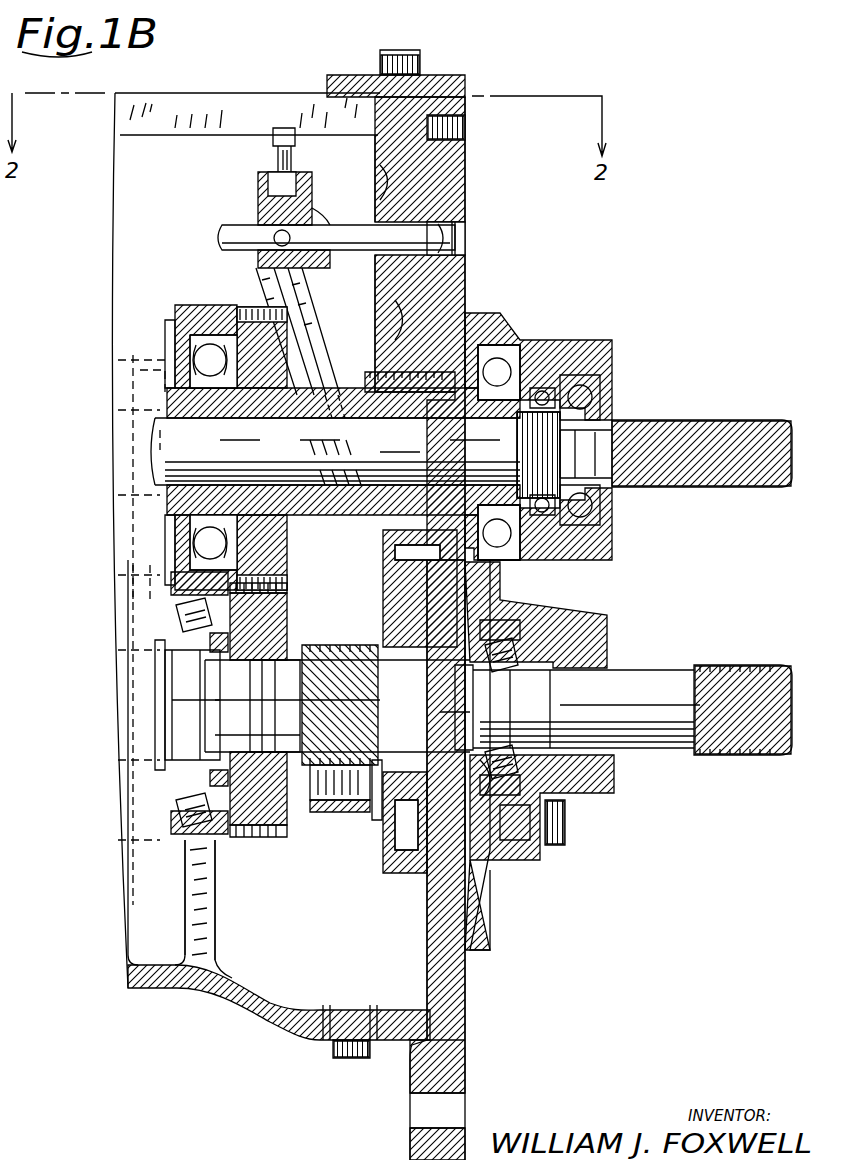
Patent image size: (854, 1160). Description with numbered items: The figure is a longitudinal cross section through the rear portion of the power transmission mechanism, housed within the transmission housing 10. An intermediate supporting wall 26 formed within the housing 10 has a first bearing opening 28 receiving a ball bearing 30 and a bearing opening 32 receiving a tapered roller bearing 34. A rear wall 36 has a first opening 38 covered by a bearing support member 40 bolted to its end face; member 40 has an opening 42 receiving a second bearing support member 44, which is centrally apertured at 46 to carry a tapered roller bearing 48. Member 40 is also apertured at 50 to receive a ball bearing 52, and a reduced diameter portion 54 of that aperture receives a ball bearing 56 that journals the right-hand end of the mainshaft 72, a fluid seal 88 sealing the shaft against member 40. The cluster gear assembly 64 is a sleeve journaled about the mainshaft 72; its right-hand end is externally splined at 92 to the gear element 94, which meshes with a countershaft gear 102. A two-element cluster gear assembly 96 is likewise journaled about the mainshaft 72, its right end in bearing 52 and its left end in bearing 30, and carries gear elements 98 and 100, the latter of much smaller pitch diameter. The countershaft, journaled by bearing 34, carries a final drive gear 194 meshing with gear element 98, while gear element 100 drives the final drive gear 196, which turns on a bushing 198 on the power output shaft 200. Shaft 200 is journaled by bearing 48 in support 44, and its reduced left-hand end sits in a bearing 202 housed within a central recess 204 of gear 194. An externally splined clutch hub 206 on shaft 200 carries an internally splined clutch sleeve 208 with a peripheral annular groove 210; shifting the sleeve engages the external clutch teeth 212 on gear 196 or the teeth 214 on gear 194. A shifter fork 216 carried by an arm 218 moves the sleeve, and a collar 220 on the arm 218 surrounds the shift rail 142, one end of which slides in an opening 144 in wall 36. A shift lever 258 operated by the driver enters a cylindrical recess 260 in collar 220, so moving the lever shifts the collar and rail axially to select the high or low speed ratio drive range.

The transmission housing 10 is at (181, 1000).
The intermediate supporting wall 26 is at (216, 920).
The first bearing opening 28 is at (195, 342).
The ball bearing 30 is at (200, 362).
The bearing opening 32 is at (185, 625).
The tapered roller bearing 34 is at (180, 645).
The rear wall 36 is at (468, 980).
The first opening 38 is at (445, 335).
The bearing support member 40 is at (562, 360).
The opening 42 is at (510, 842).
The second bearing support member 44 is at (605, 650).
The central aperture 46 is at (560, 798).
The tapered roller bearing 48 is at (550, 615).
The aperture 50 is at (497, 362).
The ball bearing 52 is at (510, 355).
The reduced diameter portion 54 is at (585, 372).
The ball bearing 56 is at (602, 402).
The cluster gear assembly 64 is at (122, 492).
The mainshaft 72 is at (170, 436).
The fluid seal 88 is at (546, 388).
The external spline 92 is at (118, 402).
The gear element 94 is at (167, 378).
The cluster gear assembly 96 is at (345, 400).
The gear element 98 is at (305, 340).
The gear element 100 is at (408, 358).
The countershaft gear 102 is at (122, 574).
The shift rail 142 is at (244, 190).
The opening 144 is at (470, 232).
The final drive gear 194 is at (255, 825).
The final drive gear 196 is at (337, 706).
The bushing 198 is at (386, 665).
The power output shaft 200 is at (670, 680).
The bearing 202 is at (250, 680).
The central recess 204 is at (245, 665).
The clutch hub 206 is at (378, 782).
The clutch sleeve 208 is at (355, 814).
The peripheral annular groove 210 is at (332, 808).
The external clutch teeth 212 is at (376, 822).
The external clutch teeth 214 is at (290, 842).
The shifter fork 216 is at (345, 518).
The arm 218 is at (308, 305).
The collar 220 is at (315, 212).
The shift lever 258 is at (274, 158).
The cylindrical recess 260 is at (270, 185).